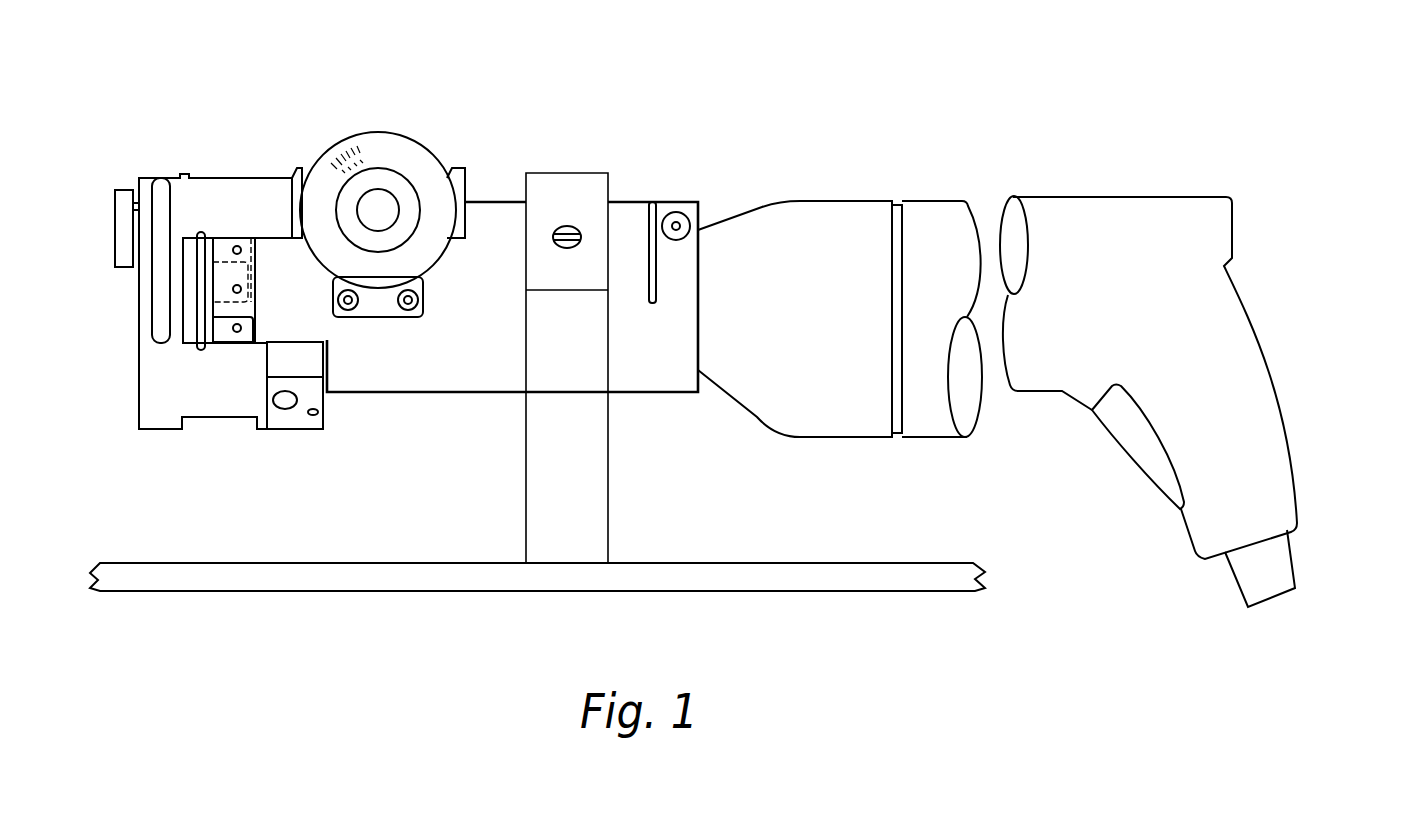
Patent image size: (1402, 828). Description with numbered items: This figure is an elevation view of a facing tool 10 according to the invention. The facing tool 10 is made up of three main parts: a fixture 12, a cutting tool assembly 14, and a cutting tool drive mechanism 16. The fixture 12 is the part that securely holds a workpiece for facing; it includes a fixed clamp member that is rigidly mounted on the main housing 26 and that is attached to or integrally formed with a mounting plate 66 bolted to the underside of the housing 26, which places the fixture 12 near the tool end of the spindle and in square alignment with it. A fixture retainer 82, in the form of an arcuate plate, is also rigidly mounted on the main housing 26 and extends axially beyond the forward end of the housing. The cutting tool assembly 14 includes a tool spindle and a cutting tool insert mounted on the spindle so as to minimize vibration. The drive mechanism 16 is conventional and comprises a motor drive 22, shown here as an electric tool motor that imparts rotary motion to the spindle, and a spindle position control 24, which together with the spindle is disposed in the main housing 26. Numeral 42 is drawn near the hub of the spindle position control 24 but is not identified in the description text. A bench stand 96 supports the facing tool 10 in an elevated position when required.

The facing tool 10 is at (1078, 97).
The fixture 12 is at (183, 124).
The cutting tool assembly 14 is at (226, 262).
The cutting tool drive mechanism 16 is at (707, 174).
The motor drive 22 is at (1155, 193).
The spindle position control 24 is at (450, 152).
The main housing 26 is at (428, 379).
The spindle 42 is at (390, 190).
The mounting plate 66 is at (295, 422).
The fixture retainer 82 is at (260, 212).
The bench stand 96 is at (612, 499).